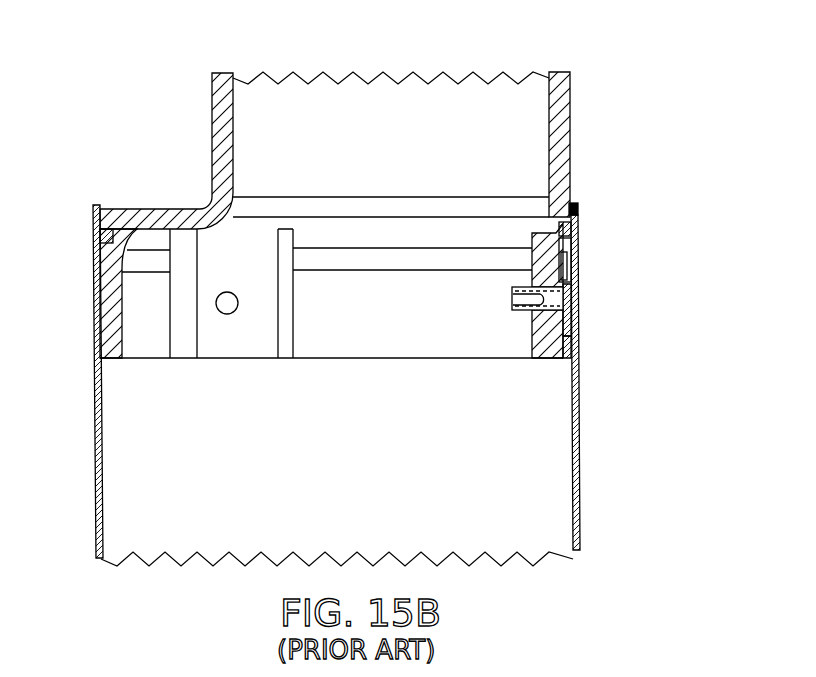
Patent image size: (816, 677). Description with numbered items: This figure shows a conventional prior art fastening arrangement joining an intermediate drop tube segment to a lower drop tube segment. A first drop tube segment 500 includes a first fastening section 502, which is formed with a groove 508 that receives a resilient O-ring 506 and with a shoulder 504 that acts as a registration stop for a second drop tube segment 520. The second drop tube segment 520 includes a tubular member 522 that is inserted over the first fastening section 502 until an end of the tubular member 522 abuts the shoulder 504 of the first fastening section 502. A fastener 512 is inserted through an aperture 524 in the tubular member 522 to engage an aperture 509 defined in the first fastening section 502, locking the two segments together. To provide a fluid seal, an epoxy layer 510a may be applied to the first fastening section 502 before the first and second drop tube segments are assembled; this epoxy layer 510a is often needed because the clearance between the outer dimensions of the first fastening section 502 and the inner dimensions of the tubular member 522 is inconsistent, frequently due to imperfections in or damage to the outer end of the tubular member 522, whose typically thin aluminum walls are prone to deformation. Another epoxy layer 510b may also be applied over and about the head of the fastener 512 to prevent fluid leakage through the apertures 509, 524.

The first drop tube segment 500 is at (396, 135).
The first fastening section 502 is at (335, 150).
The shoulder 504 is at (575, 203).
The resilient O-ring 506 is at (550, 217).
The groove 508 is at (572, 248).
The aperture 509 is at (512, 300).
The epoxy layer 510a is at (100, 240).
The epoxy layer 510b is at (577, 285).
The fastener 512 is at (575, 312).
The second drop tube segment 520 is at (367, 385).
The tubular member 522 is at (578, 462).
The aperture 524 is at (547, 316).